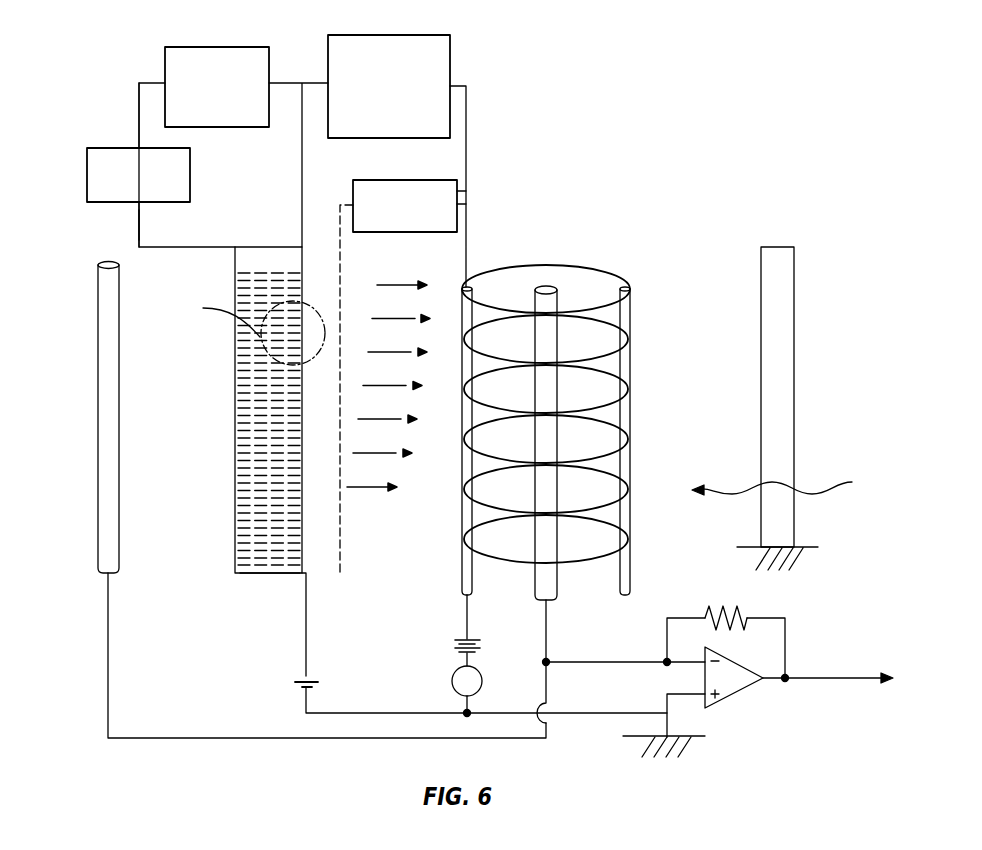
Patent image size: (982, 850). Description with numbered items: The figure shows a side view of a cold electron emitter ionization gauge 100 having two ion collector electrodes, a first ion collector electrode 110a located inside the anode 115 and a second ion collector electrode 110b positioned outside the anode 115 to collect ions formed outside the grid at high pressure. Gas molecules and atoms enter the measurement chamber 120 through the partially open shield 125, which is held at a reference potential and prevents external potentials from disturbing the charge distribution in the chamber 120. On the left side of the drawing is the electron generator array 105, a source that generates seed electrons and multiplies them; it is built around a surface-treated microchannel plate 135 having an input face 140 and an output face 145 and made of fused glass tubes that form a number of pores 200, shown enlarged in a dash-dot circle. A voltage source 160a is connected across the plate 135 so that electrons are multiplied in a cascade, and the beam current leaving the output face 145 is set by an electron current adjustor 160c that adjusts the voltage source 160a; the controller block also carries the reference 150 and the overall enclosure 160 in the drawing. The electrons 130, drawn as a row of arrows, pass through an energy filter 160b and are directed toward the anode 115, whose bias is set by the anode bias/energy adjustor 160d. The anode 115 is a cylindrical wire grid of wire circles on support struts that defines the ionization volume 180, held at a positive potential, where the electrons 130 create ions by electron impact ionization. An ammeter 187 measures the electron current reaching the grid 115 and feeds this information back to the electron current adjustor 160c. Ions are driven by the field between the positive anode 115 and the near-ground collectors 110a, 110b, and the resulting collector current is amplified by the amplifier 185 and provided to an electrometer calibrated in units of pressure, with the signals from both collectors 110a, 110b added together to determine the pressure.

The ionization gauge 100 is at (702, 98).
The electron generator array 105 is at (217, 445).
The first ion collector electrode 110a is at (545, 287).
The second ion collector electrode 110b is at (98, 400).
The anode 115 is at (600, 403).
The measurement chamber 120 is at (400, 600).
The shield 125 is at (795, 385).
The electron beam 130 is at (370, 488).
The microchannel plate 135 is at (268, 562).
The input face 140 is at (235, 512).
The output face 145 is at (303, 573).
The voltage source 150 is at (139, 230).
The controller 160 is at (302, 203).
The voltage source 160a is at (190, 174).
The energy filter 160b is at (457, 192).
The electron current adjustor 160c is at (192, 47).
The anode bias/energy adjustor 160d is at (425, 35).
The ionization volume 180 is at (592, 293).
The amplifier 185 is at (733, 695).
The ammeter 187 is at (452, 681).
The pores 200 is at (287, 334).